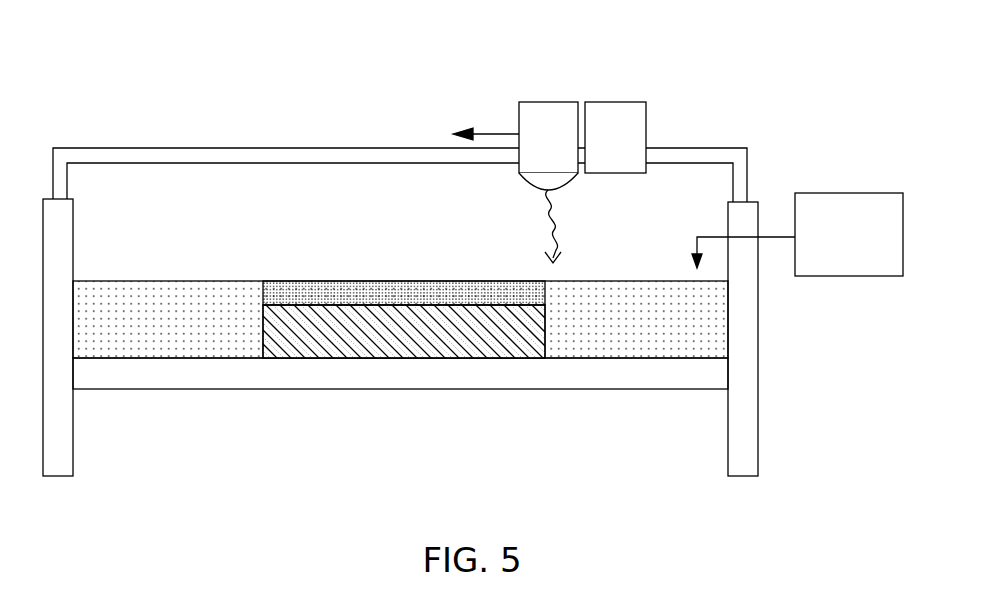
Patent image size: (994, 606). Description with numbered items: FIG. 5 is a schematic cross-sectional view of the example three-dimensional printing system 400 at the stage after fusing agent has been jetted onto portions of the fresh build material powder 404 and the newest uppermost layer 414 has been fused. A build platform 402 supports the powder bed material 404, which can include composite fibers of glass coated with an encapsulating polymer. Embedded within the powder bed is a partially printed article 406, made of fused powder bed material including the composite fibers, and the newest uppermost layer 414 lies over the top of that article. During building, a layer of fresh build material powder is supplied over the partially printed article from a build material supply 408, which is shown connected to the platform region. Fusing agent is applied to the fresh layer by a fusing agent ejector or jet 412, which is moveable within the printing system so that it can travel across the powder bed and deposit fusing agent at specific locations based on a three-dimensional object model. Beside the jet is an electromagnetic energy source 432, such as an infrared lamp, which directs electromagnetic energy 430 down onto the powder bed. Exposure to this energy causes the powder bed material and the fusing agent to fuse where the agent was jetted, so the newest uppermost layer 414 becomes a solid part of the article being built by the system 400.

The 3D printing system 400 is at (145, 53).
The build platform 402 is at (575, 370).
The powder bed material 404 is at (223, 338).
The partially printed article 406 is at (432, 333).
The build material supply 408 is at (830, 246).
The fusing agent ejector or jet 412 is at (635, 149).
The newest uppermost layer 414 is at (292, 287).
The electromagnetic energy 430 is at (535, 219).
The electromagnetic energy source 432 is at (568, 149).